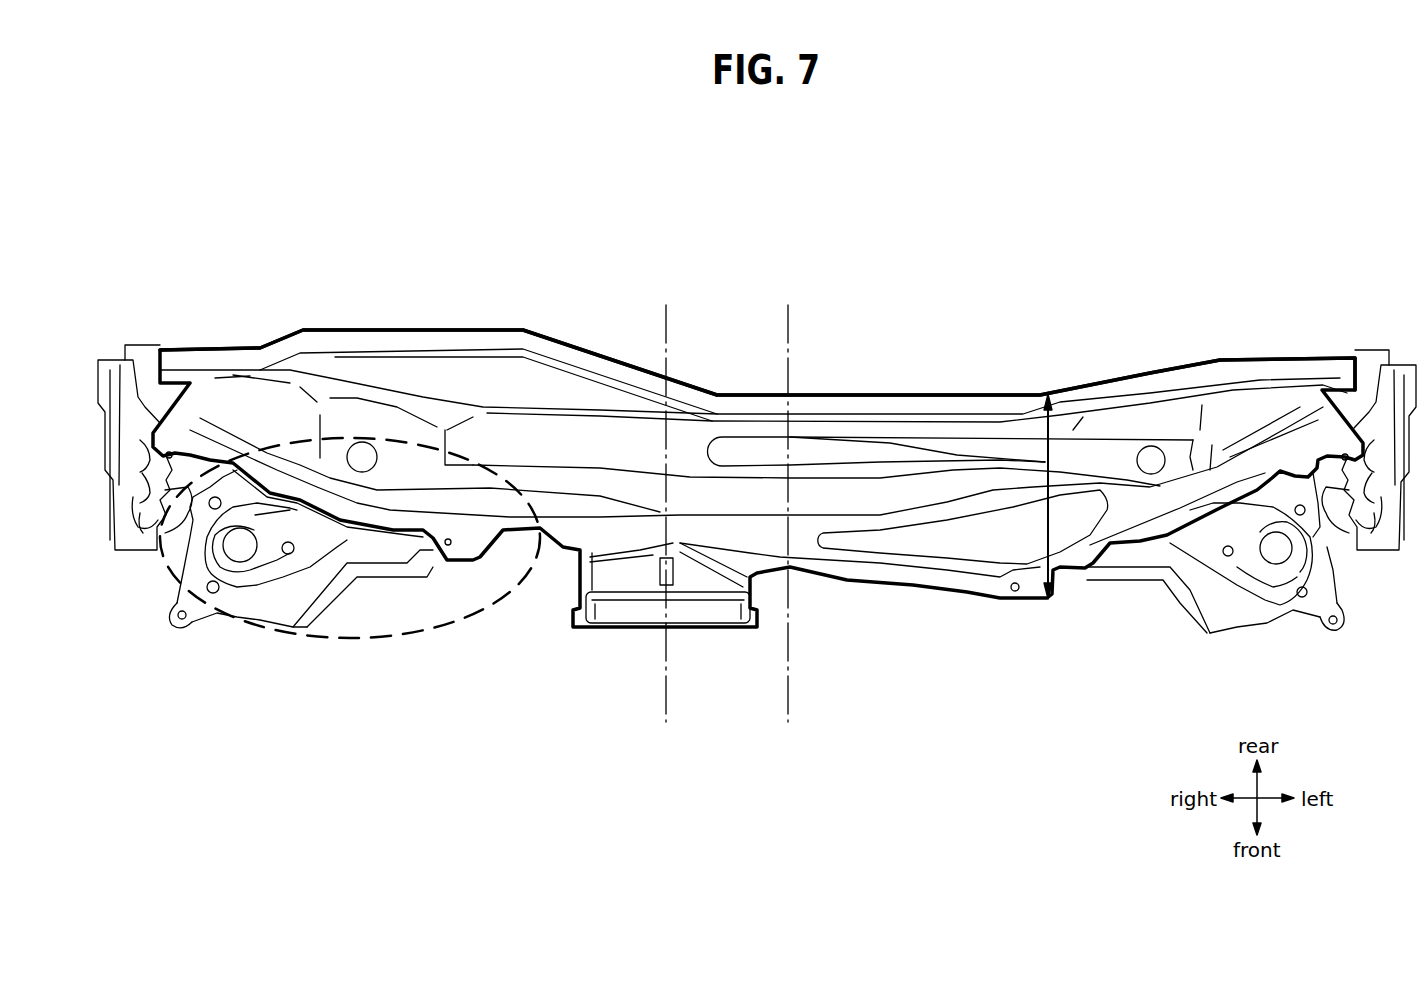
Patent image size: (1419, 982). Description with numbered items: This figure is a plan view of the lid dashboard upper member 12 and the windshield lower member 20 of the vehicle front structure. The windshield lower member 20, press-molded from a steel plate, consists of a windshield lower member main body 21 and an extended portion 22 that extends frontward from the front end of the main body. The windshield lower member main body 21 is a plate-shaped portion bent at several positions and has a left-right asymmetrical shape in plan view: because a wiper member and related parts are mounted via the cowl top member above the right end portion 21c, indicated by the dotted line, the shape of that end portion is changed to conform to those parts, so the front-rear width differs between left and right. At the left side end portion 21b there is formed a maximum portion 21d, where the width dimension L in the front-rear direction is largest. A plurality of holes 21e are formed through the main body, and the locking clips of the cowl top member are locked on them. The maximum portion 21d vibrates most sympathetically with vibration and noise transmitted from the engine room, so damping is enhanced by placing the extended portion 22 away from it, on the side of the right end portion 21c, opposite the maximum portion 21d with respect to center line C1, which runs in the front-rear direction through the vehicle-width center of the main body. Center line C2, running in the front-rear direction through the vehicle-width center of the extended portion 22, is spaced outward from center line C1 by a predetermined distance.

The lid dashboard upper member 12 is at (1283, 613).
The windshield lower member 20 is at (943, 393).
The windshield lower member main body 21 is at (857, 430).
The left side end portion 21b is at (1163, 414).
The right end portion 21c is at (248, 380).
The maximum portion 21d is at (1058, 457).
The holes 21e is at (171, 452).
The extended portion 22 is at (583, 633).
The width dimension L is at (1046, 450).
The center line C1 is at (789, 687).
The center line C2 is at (667, 687).